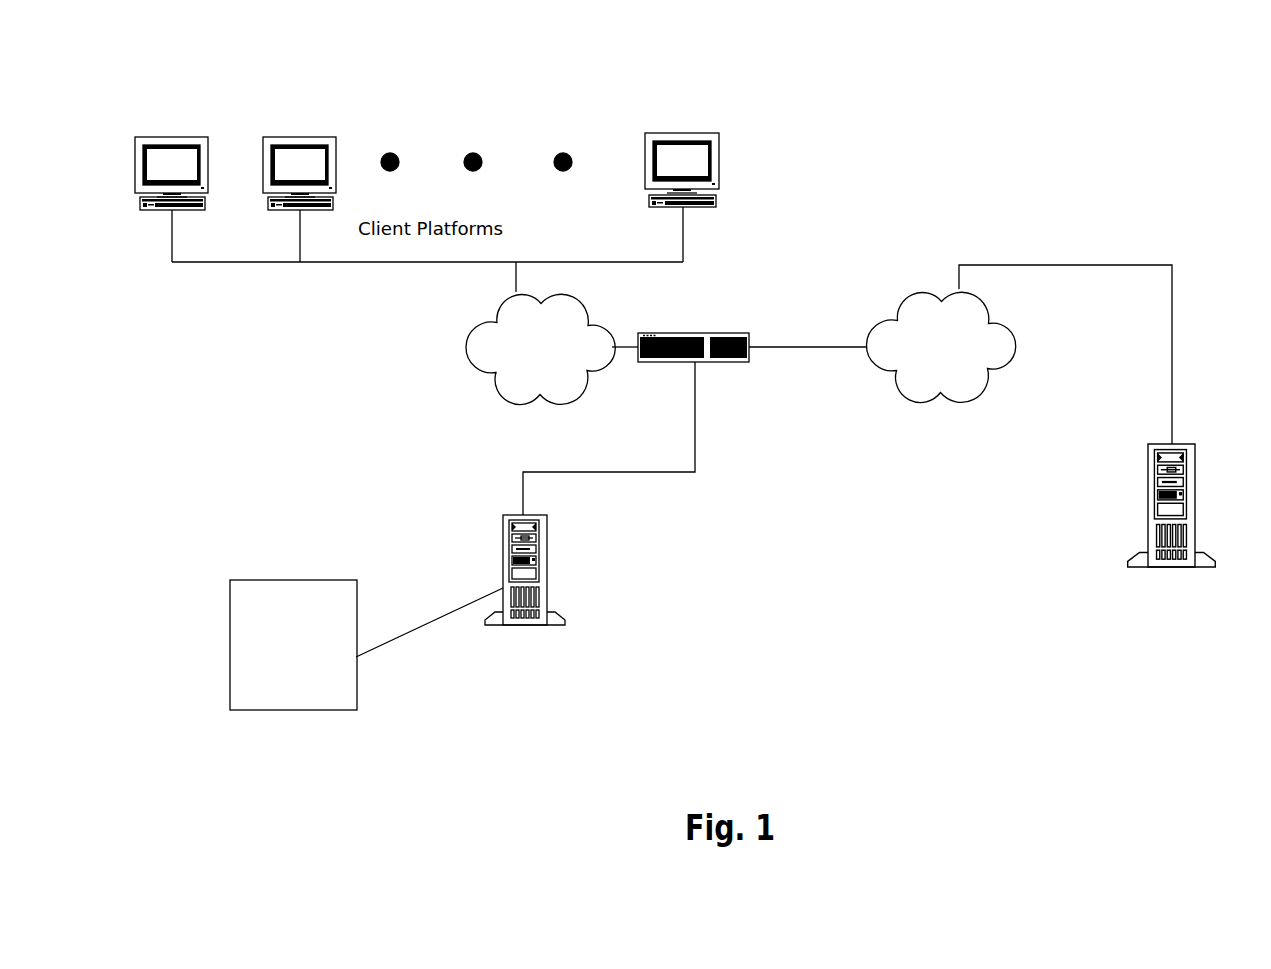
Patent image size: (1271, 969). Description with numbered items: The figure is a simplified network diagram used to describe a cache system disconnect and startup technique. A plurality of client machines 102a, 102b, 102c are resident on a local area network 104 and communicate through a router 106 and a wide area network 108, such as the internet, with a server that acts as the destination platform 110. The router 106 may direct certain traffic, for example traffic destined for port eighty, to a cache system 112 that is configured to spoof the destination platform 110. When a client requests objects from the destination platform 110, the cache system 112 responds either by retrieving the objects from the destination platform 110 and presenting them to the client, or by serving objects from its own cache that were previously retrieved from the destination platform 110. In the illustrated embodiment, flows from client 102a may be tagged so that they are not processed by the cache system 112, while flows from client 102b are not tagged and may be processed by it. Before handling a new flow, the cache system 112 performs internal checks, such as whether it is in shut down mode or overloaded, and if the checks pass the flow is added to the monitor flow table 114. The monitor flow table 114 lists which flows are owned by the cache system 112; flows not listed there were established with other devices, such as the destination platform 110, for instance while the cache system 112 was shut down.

The client machine 102a is at (185, 137).
The client machine 102b is at (311, 137).
The client machine 102c is at (695, 133).
The local area network 104 is at (563, 296).
The router 106 is at (694, 333).
The wide area network 108 is at (903, 278).
The destination platform 110 is at (1148, 502).
The cache system 112 is at (503, 567).
The monitor flow table 114 is at (230, 580).